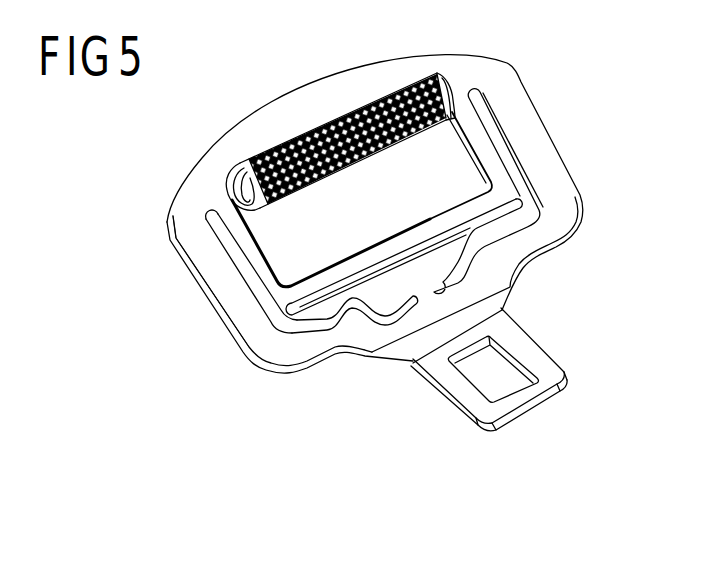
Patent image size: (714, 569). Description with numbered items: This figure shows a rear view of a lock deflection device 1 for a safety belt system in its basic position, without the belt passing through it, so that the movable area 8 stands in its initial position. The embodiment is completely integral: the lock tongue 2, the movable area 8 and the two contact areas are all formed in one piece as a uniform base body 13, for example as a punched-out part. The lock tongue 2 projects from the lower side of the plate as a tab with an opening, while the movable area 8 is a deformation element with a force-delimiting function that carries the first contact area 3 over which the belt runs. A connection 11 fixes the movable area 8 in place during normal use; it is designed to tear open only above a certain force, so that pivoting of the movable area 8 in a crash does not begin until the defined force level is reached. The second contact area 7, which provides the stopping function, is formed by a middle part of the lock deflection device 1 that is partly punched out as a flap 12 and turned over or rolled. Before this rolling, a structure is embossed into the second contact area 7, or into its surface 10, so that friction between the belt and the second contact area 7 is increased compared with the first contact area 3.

The lock deflection device 1 is at (227, 357).
The lock tongue 2 is at (487, 407).
The first contact area 3 is at (335, 277).
The second contact area 7 is at (360, 168).
The movable area 8 is at (247, 251).
The surface 10 is at (408, 82).
The connection 11 is at (429, 291).
The flap 12 is at (246, 185).
The base body 13 is at (208, 332).